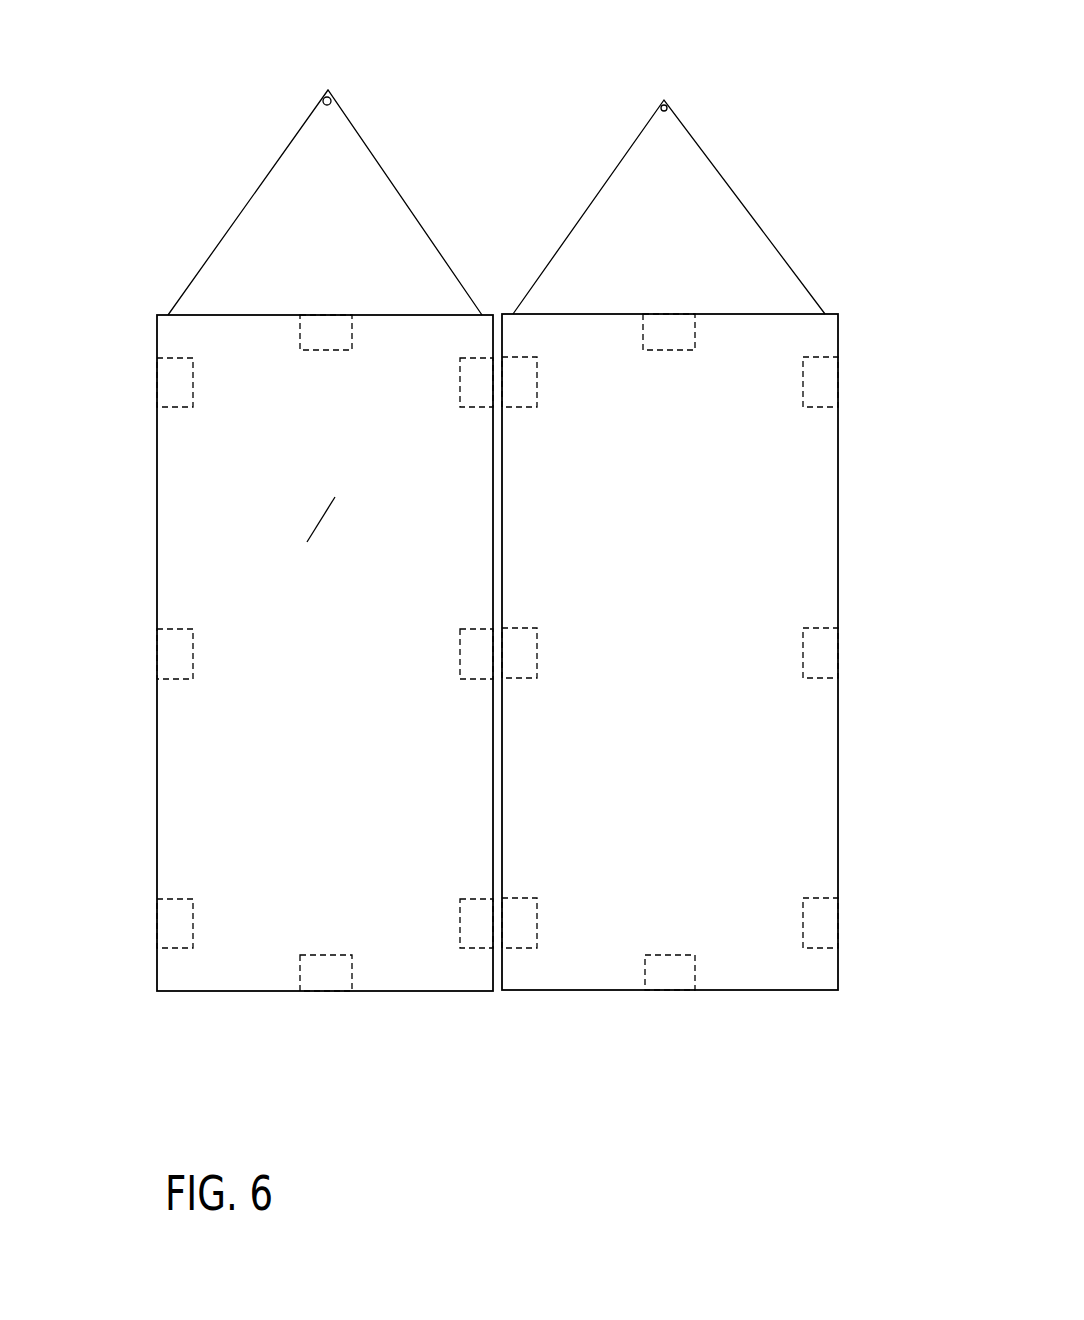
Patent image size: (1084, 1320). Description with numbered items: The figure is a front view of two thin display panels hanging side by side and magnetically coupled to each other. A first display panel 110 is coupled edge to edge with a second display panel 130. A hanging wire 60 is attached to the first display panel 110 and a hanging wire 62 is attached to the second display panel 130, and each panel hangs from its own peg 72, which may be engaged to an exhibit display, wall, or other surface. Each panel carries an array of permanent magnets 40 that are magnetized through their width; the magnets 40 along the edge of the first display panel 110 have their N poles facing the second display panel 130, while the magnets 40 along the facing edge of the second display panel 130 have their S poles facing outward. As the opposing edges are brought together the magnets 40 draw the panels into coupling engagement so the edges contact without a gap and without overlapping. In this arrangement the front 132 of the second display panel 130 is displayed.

The permanent magnets 40 is at (157, 920).
The hanging wire 60 is at (252, 193).
The hanging wire 62 is at (598, 190).
The peg 72 is at (333, 97).
The first display panel 110 is at (197, 530).
The second display panel 130 is at (803, 543).
The front 132 is at (667, 542).